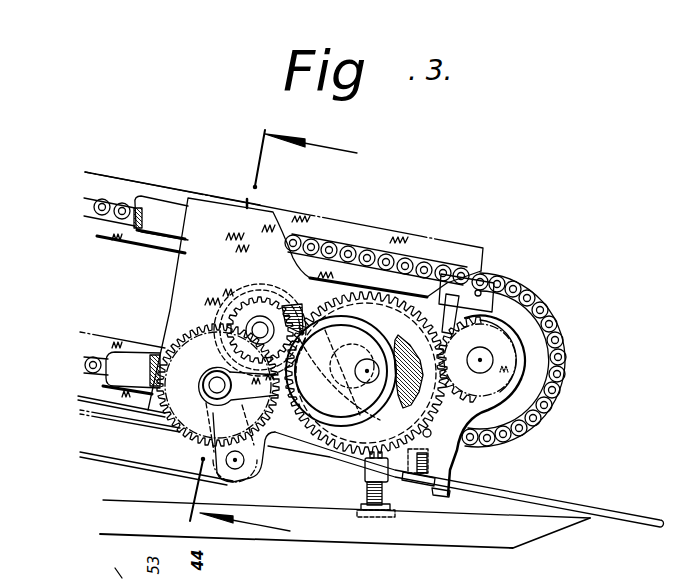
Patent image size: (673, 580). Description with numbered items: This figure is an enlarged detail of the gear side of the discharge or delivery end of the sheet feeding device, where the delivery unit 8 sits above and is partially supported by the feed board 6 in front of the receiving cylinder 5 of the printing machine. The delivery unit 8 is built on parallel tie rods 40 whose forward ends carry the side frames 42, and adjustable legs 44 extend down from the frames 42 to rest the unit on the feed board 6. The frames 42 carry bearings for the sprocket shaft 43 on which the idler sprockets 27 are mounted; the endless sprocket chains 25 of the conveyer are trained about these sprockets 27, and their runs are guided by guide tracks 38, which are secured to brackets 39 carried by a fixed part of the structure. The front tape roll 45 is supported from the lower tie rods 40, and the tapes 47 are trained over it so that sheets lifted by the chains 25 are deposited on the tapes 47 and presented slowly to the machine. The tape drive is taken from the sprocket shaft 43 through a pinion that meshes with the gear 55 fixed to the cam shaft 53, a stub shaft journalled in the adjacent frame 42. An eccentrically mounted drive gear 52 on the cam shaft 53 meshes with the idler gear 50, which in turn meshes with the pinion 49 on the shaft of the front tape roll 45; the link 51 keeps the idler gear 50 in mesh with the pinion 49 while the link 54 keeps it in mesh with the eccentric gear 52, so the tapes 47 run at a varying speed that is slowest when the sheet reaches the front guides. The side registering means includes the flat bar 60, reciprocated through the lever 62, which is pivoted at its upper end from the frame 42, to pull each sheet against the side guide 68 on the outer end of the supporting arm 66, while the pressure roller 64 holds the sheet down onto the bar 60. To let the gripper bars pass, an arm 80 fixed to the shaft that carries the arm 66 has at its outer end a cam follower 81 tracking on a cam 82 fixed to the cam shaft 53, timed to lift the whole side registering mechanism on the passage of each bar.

The receiving cylinder 5 is at (256, 325).
The feed board 6 is at (322, 528).
The delivery unit 8 is at (110, 170).
The endless sprocket chains 25 is at (330, 239).
The idler sprockets 27 is at (543, 343).
The guide tracks 38 is at (443, 243).
The brackets 39 is at (247, 203).
The tie rods 40 is at (152, 210).
The frames 42 is at (200, 206).
The sprocket shaft 43 is at (496, 360).
The adjustable legs 44 is at (388, 489).
The front tape roll 45 is at (231, 470).
The tapes 47 is at (128, 468).
The pinion 49 is at (260, 474).
The idler gear 50 is at (198, 328).
The link 51 is at (203, 385).
The eccentrically mounted drive gear 52 is at (313, 437).
The cam shaft 53 is at (356, 370).
The link 54 is at (494, 406).
The gear 55 is at (413, 300).
The flat bar 60 is at (437, 495).
The lever 62 is at (540, 300).
The pressure roller 64 is at (432, 465).
The supporting arm 66 is at (263, 300).
The side guide 68 is at (450, 491).
The arm 80 is at (298, 314).
The cam follower 81 is at (363, 303).
The cam 82 is at (418, 354).